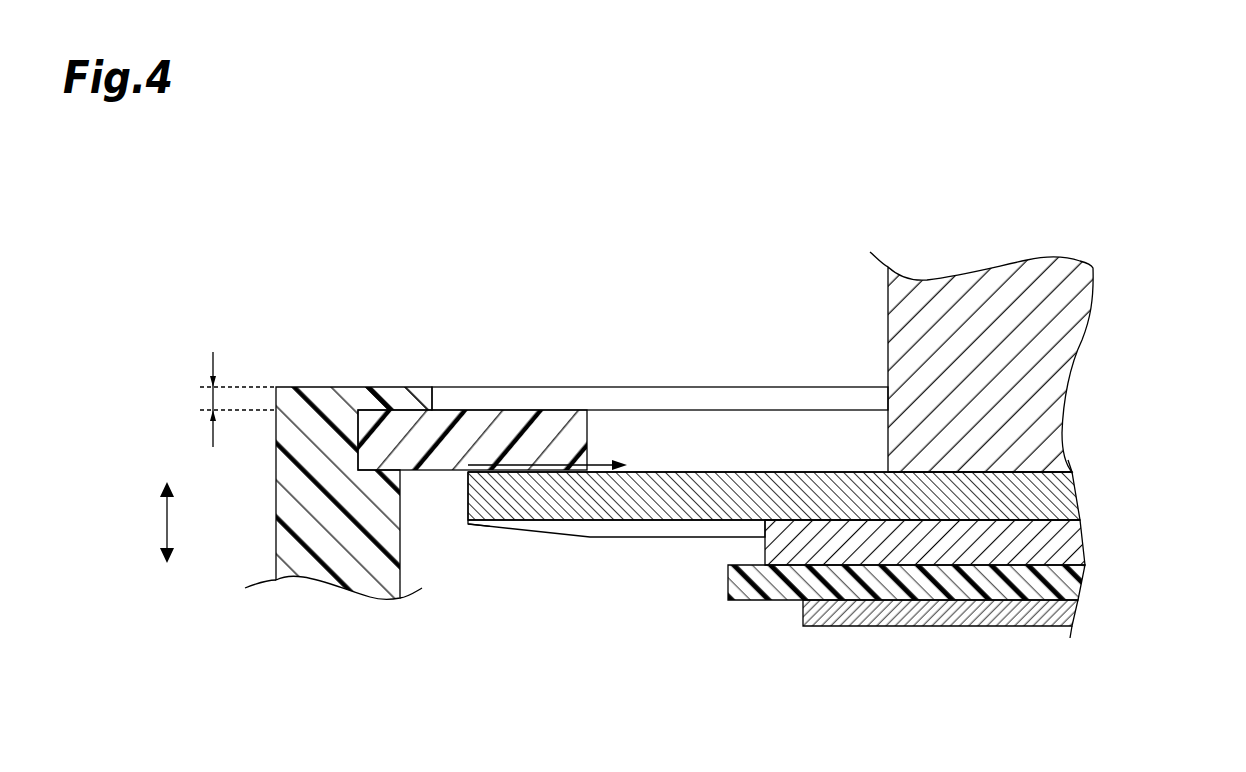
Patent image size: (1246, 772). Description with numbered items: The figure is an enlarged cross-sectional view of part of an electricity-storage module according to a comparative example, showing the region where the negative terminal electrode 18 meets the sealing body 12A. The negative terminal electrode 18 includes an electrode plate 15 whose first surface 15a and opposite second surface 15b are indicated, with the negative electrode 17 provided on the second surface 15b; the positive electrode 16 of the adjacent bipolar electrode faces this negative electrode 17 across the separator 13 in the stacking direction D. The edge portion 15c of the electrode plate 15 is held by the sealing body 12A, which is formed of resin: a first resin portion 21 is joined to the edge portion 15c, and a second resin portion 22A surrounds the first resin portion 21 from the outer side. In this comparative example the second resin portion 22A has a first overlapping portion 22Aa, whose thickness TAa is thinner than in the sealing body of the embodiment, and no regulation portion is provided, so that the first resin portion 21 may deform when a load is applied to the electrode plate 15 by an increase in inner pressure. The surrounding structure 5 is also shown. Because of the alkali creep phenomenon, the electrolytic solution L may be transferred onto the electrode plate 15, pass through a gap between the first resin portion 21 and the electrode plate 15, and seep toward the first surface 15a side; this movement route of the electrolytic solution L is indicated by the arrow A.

The housing 5 is at (1000, 277).
The sealing body 12A is at (335, 378).
The first overlapping portion 22Aa is at (415, 395).
The first resin portion 21 is at (503, 425).
The second surface 15b is at (812, 522).
The first surface 15a is at (865, 472).
The thickness of thin plate portion TAa is at (210, 399).
The second resin portion 22A is at (276, 497).
The stacking direction D is at (164, 522).
The edge portion 15c is at (468, 498).
The arrow A is at (485, 523).
The electrolytic solution L is at (655, 537).
The electrode plate 15 is at (785, 444).
The negative electrode 17 is at (1070, 535).
The negative terminal electrode 18 is at (811, 451).
The separator 13 is at (780, 600).
The positive electrode 16 is at (968, 627).